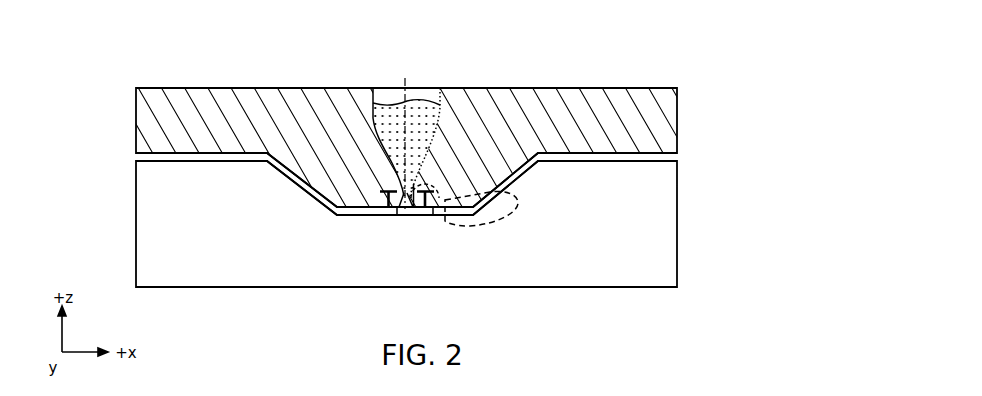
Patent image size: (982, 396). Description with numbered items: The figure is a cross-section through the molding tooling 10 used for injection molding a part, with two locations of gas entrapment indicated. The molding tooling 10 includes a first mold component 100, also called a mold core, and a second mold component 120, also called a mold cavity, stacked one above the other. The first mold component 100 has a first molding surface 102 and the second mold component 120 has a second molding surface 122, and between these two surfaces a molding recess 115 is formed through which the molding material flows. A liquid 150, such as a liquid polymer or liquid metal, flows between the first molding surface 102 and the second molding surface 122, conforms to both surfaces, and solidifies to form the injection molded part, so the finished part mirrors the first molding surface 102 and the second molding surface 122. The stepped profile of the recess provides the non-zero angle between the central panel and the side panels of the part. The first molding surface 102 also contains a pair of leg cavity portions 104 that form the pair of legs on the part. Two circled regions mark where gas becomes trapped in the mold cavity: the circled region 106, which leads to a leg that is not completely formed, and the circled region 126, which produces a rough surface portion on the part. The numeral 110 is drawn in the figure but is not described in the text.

The molding tooling 10 is at (404, 177).
The first mold component 100 is at (566, 135).
The first molding surface 102 is at (247, 307).
The leg cavity portions 104 is at (240, 87).
The circled region 106 is at (437, 196).
The channel 110 is at (139, 156).
The molding recess 115 is at (360, 214).
The second mold component 120 is at (620, 292).
The second molding surface 122 is at (262, 287).
The circled region 126 is at (518, 195).
The liquid 150 is at (383, 113).